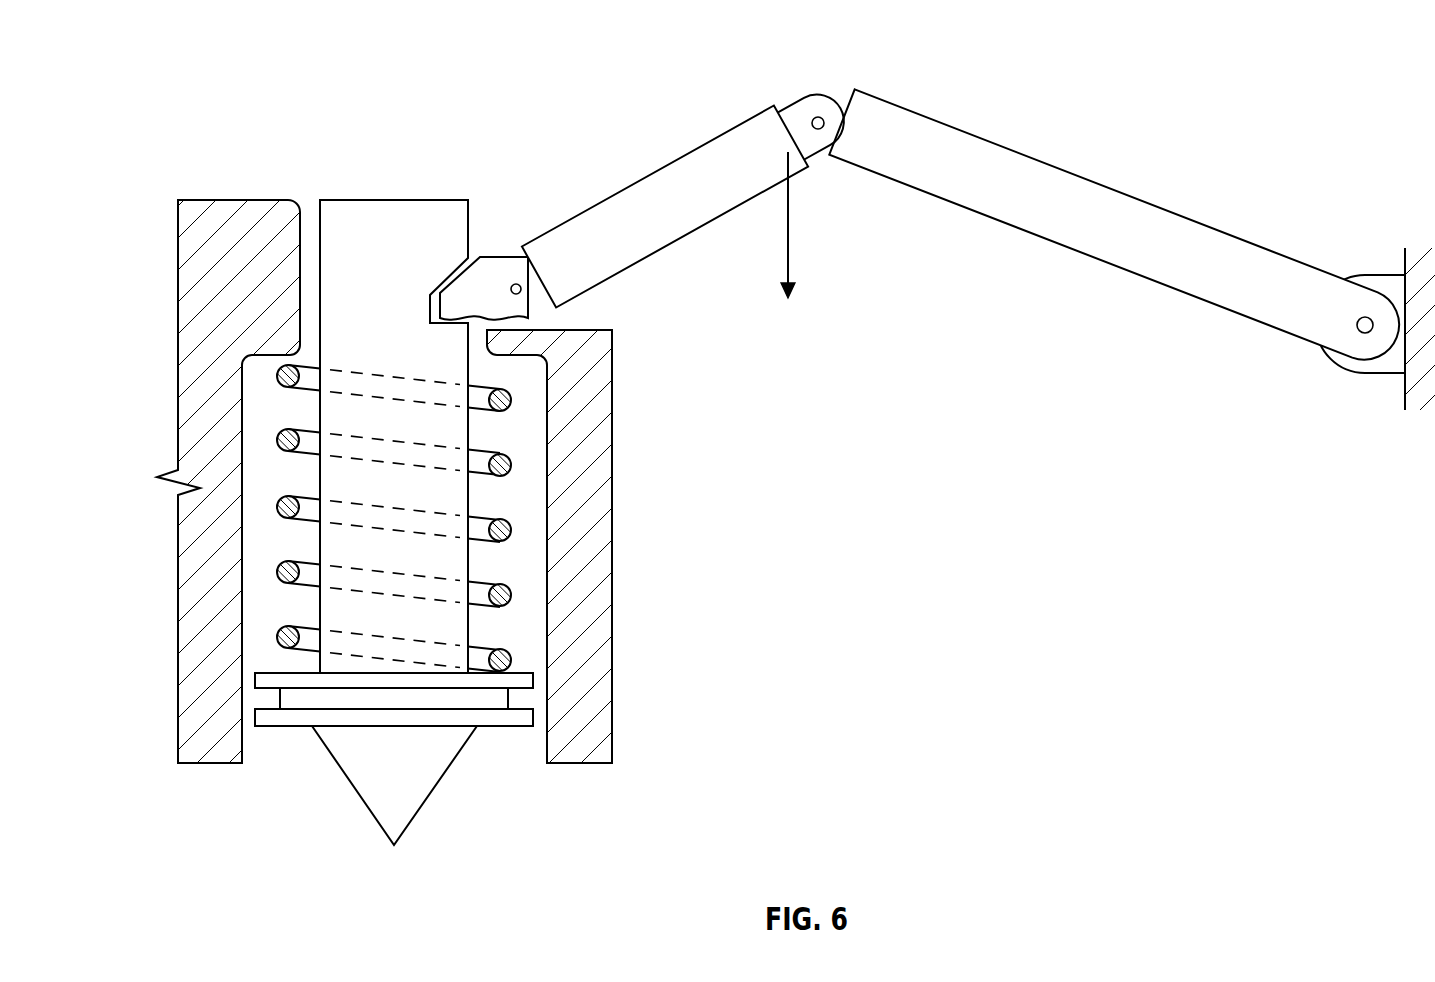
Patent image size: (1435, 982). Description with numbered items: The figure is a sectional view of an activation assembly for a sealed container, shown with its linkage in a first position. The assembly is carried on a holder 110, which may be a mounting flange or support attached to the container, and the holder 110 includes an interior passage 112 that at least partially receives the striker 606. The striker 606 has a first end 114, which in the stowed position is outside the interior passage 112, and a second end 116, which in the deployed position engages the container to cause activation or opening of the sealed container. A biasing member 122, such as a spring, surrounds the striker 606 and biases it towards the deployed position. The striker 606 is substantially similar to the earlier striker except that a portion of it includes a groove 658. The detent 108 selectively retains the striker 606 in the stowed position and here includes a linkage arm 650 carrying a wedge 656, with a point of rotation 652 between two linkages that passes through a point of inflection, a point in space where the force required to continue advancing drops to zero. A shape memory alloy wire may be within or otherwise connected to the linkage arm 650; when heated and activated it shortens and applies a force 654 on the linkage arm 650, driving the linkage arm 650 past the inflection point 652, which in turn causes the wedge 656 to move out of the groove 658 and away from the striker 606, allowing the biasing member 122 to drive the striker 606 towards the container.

The detent 108 is at (495, 270).
The holder 110 is at (200, 655).
The interior passage 112 is at (540, 622).
The first end 114 is at (368, 200).
The second end 116 is at (394, 845).
The biasing member 122 is at (285, 440).
The striker 606 is at (337, 540).
The linkage arm 650 is at (1153, 215).
The point of rotation 652 is at (818, 117).
The force 654 is at (788, 250).
The wedge 656 is at (497, 300).
The groove 658 is at (433, 308).